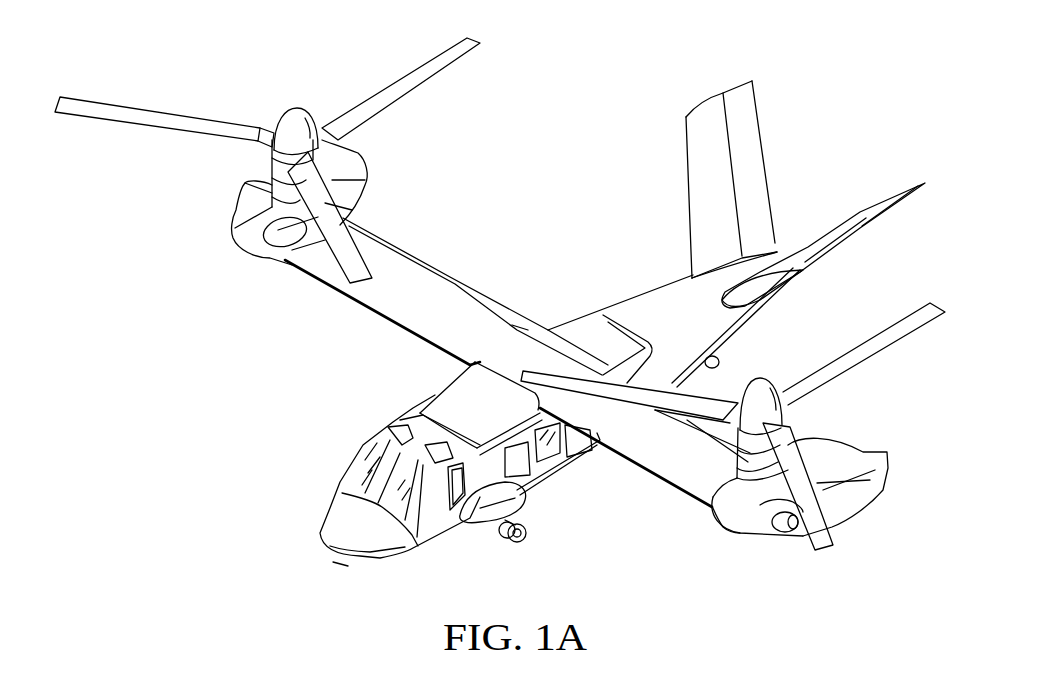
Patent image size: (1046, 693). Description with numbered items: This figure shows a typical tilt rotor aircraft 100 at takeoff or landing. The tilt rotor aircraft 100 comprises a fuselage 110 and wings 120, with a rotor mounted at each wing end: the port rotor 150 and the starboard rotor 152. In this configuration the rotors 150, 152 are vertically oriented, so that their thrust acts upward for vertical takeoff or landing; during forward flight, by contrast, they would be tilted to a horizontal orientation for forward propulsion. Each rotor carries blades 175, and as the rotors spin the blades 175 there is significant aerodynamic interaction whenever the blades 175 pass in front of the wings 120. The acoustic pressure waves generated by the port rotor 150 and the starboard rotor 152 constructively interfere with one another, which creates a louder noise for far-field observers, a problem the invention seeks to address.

The tilt rotor aircraft 100 is at (858, 60).
The fuselage 110 is at (383, 560).
The wings 120 is at (462, 292).
The rotor 150 is at (785, 413).
The rotor 152 is at (295, 107).
The blades 175 is at (412, 65).